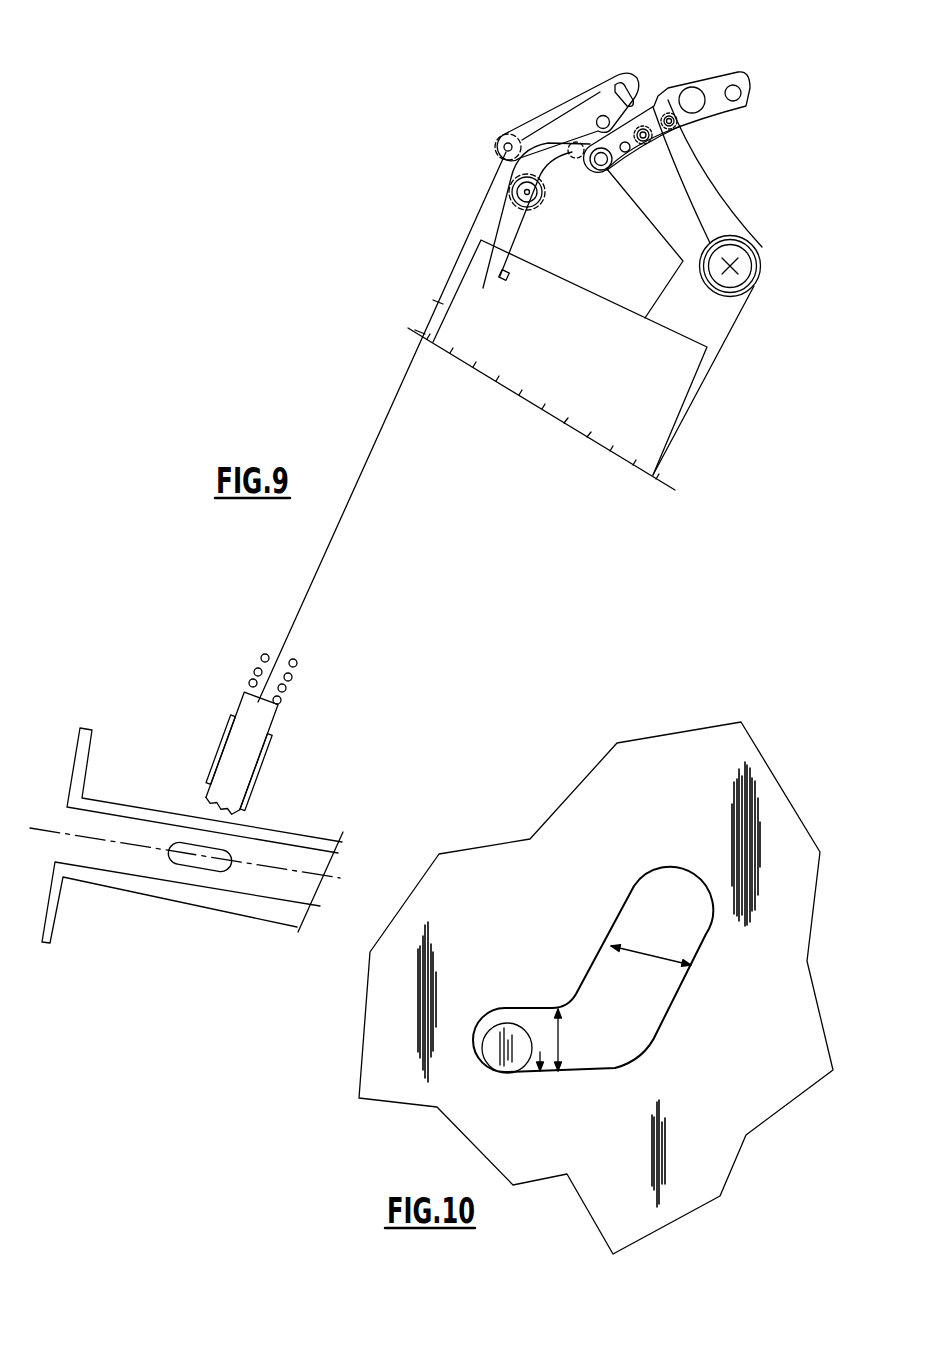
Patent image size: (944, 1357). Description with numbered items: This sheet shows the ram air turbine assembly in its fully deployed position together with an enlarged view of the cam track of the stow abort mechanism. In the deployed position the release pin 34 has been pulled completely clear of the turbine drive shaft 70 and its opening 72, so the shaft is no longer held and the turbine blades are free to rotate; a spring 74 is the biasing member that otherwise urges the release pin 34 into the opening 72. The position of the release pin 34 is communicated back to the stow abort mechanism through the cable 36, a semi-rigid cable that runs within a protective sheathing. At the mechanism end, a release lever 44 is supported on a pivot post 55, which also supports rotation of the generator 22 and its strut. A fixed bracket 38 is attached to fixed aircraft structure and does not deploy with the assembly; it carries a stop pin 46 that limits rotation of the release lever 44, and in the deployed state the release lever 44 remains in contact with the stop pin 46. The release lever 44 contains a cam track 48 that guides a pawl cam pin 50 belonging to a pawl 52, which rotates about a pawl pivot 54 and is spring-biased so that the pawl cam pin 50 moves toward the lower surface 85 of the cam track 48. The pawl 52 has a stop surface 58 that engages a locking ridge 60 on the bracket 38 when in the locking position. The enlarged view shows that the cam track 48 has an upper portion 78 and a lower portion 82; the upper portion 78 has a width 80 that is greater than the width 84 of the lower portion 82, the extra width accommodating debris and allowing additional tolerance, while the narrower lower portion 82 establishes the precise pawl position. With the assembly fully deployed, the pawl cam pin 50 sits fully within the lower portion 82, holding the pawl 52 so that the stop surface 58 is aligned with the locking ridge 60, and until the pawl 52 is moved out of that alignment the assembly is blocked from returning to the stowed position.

In FIG. 9, the generator 22 is at (653, 412).
In FIG. 9, the release pin 34 is at (237, 773).
In FIG. 9, the cable 36 is at (348, 525).
In FIG. 9, the fixed bracket 38 is at (710, 88).
In FIG. 9, the release lever 44 is at (685, 212).
In FIG. 10, the release lever 44 is at (774, 1043).
In FIG. 9, the stop pin 46 is at (605, 170).
In FIG. 9, the cam track 48 is at (644, 104).
In FIG. 10, the cam track 48 is at (718, 940).
In FIG. 9, the pawl cam pin 50 is at (601, 116).
In FIG. 10, the pawl cam pin 50 is at (505, 1048).
In FIG. 9, the pawl 52 is at (505, 162).
In FIG. 9, the pawl pivot 54 is at (510, 200).
In FIG. 9, the pivot post 55 is at (762, 266).
In FIG. 9, the stop surface 58 is at (657, 108).
In FIG. 9, the locking ridge 60 is at (642, 143).
In FIG. 9, the turbine drive shaft 70 is at (246, 910).
In FIG. 9, the opening 72 is at (232, 856).
In FIG. 9, the spring 74 is at (302, 681).
In FIG. 10, the upper portion 78 is at (648, 972).
In FIG. 10, the width 80 is at (643, 950).
In FIG. 10, the lower portion 82 is at (537, 1080).
In FIG. 10, the width 84 is at (559, 1038).
In FIG. 10, the lower surface 85 is at (559, 1050).